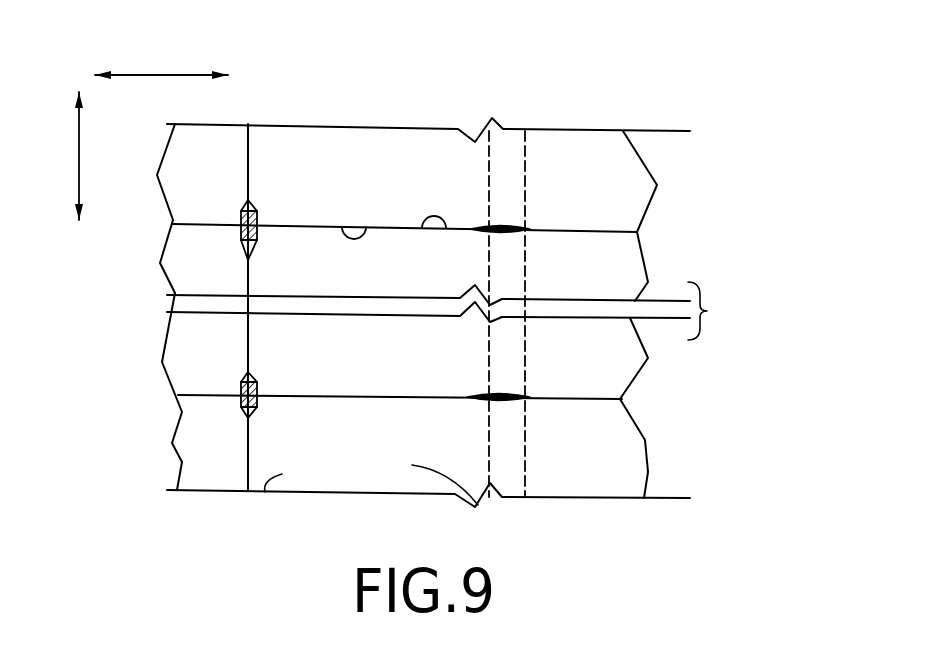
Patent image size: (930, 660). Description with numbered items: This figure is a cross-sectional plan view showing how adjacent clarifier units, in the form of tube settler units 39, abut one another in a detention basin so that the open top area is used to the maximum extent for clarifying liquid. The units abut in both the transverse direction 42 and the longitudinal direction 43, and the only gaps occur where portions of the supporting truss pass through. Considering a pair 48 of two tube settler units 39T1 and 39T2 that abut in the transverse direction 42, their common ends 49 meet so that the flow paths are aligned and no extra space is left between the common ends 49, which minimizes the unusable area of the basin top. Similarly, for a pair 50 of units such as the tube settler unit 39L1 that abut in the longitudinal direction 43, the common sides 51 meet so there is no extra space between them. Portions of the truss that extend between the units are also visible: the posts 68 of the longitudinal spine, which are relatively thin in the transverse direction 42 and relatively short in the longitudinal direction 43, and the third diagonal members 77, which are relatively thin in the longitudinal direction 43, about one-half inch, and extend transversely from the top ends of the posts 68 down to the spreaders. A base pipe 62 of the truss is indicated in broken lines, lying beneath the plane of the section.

The tube settler unit 39 is at (275, 377).
The tube settler unit 39L1 is at (310, 355).
The tube settler unit 39T1 is at (187, 413).
The tube settler unit 39T2 is at (387, 480).
The transverse direction 42 is at (182, 28).
The longitudinal direction 43 is at (79, 157).
The pair of tube settler units 48 is at (226, 478).
The common ends 49 is at (248, 168).
The pair of tube settler units 50 is at (395, 355).
The common sides 51 is at (342, 227).
The base pipe 62 is at (525, 167).
The post 68 is at (241, 226).
The third diagonal member 77 is at (497, 225).